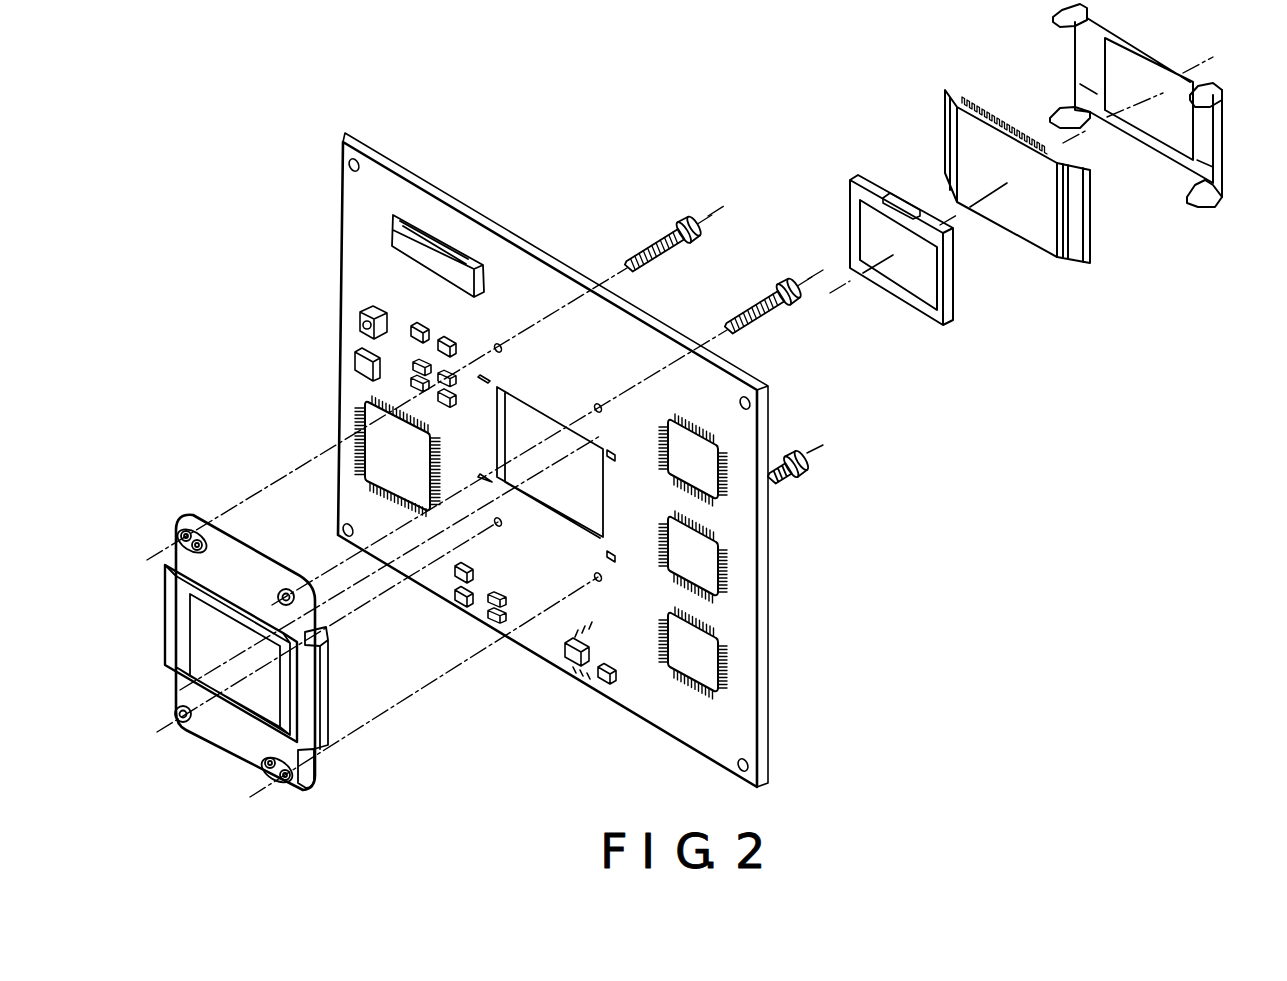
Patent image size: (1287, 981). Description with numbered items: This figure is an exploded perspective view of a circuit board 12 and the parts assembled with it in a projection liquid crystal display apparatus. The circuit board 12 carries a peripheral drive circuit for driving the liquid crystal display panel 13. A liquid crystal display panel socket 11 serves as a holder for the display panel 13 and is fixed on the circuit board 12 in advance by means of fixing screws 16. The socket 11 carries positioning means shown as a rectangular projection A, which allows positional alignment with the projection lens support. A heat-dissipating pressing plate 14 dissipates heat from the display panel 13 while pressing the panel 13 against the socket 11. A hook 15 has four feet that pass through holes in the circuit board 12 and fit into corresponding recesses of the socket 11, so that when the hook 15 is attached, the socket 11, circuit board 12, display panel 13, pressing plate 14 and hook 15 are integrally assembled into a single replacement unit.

The liquid crystal display panel socket 11 is at (206, 613).
The rectangular projection A is at (180, 612).
The circuit board 12 is at (768, 552).
The liquid crystal display panel 13 is at (957, 312).
The heat-dissipating pressing plate 14 is at (1093, 248).
The hook 15 is at (1228, 180).
The fixing screws 16 is at (662, 243).